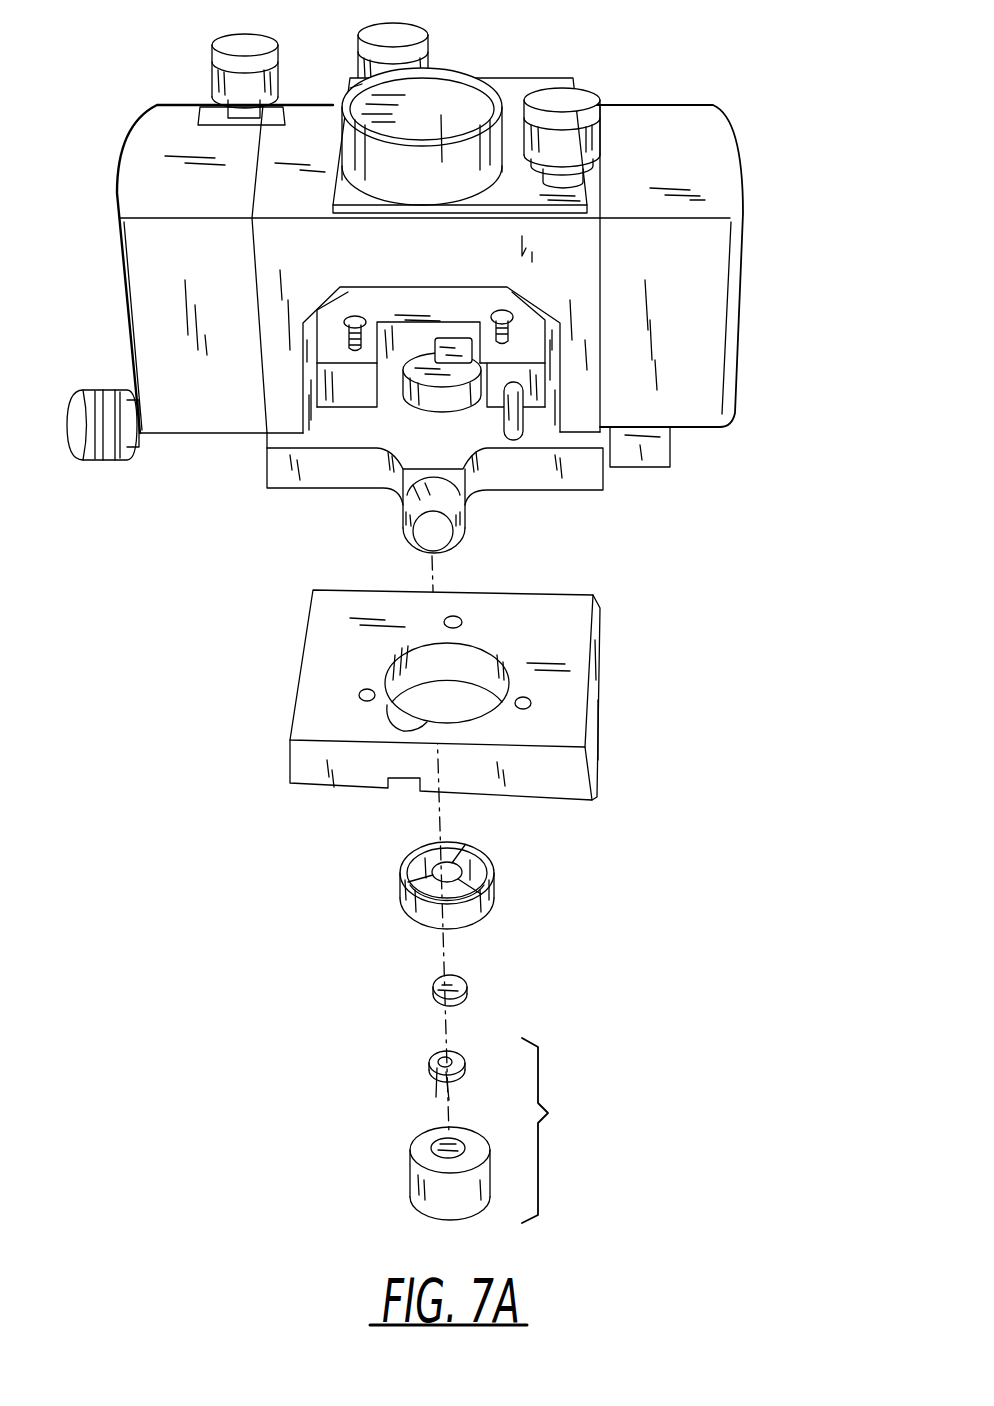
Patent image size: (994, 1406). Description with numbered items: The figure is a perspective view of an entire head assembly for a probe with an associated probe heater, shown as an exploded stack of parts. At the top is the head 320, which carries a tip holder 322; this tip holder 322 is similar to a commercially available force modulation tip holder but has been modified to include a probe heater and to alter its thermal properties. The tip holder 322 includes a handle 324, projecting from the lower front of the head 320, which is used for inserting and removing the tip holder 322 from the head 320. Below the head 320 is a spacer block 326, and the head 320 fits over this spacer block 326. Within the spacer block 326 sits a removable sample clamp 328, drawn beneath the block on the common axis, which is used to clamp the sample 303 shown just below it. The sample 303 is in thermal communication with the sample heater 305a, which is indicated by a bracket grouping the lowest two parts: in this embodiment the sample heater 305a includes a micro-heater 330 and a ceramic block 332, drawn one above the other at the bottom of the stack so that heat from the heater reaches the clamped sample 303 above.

The head 320 is at (708, 140).
The tip holder 322 is at (353, 398).
The handle 324 is at (557, 468).
The spacer block 326 is at (563, 668).
The removable sample clamp 328 is at (493, 892).
The sample 303 is at (467, 988).
The micro-heater 330 is at (440, 1071).
The ceramic block 332 is at (413, 1183).
The sample heater 305a is at (582, 1130).